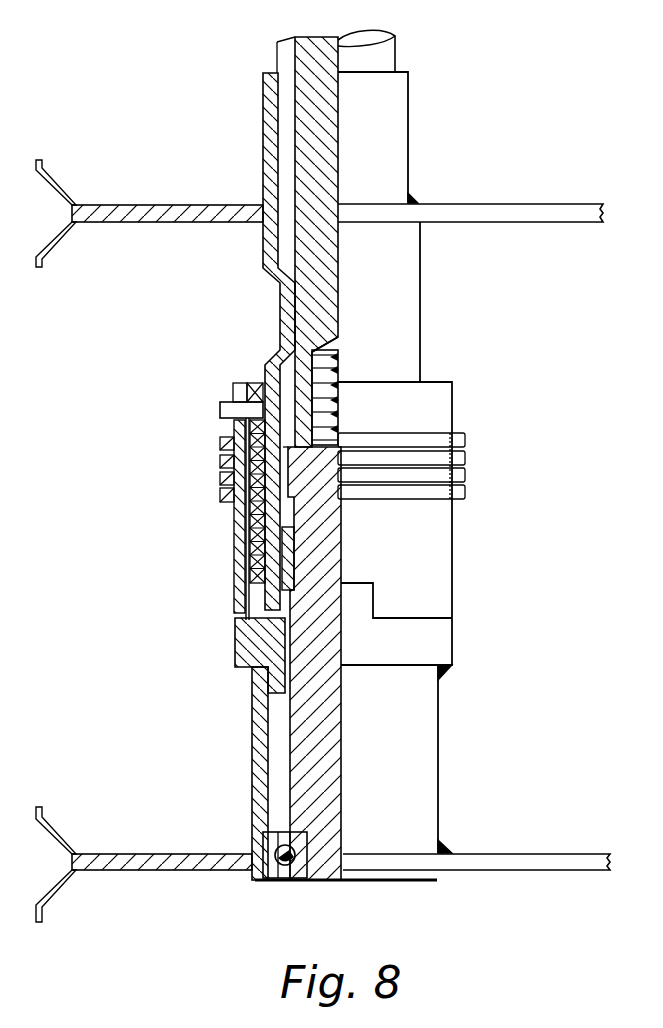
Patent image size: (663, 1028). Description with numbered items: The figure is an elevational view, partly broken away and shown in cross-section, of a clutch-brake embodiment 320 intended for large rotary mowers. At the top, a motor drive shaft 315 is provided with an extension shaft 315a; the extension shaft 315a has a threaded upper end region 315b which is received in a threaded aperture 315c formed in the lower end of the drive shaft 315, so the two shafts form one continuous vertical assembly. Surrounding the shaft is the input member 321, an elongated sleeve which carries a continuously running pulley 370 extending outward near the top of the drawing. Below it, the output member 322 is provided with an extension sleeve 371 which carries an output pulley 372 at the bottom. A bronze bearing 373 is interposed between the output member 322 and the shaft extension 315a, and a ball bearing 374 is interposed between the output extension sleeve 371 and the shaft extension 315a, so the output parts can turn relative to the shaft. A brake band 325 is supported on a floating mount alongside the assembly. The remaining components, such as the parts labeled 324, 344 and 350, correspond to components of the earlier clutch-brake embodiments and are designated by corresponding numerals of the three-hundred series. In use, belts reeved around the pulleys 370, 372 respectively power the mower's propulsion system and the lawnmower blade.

The motor drive shaft 315 is at (380, 57).
The extension shaft 315a is at (330, 718).
The threaded upper end region 315b is at (338, 375).
The threaded aperture 315c is at (340, 343).
The clutch-brake embodiment 320 is at (522, 130).
The input member 321 is at (262, 272).
The output member 322 is at (238, 652).
The sealing stack plate 324 is at (236, 540).
The brake band 325 is at (220, 463).
The flange bar 344 is at (222, 410).
The seal 350 is at (255, 383).
The continuously running pulley 370 is at (118, 206).
The extension sleeve 371 is at (262, 768).
The output pulley 372 is at (110, 864).
The bronze bearing 373 is at (293, 562).
The ball bearing 374 is at (296, 866).